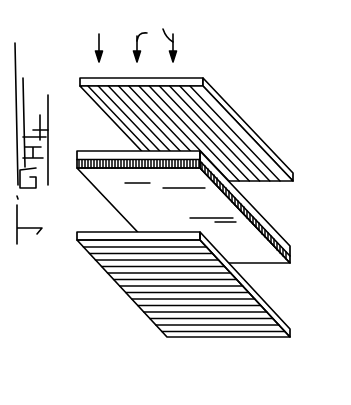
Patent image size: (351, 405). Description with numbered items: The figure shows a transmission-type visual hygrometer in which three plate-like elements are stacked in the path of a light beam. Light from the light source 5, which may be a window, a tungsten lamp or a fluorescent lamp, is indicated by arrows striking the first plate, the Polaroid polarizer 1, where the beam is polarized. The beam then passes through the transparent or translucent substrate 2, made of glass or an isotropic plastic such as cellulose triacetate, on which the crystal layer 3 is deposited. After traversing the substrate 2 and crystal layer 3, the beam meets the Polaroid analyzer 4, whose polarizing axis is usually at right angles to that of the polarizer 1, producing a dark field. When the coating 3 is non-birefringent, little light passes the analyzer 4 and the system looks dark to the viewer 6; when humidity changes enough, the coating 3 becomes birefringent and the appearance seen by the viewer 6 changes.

The Polaroid polarizer 1 is at (293, 181).
The transparent or translucent substrate 2 is at (209, 223).
The crystal layer 3 is at (294, 264).
The Polaroid analyzer 4 is at (291, 338).
The light source 5 is at (99, 34).
The viewer 6 is at (163, 366).